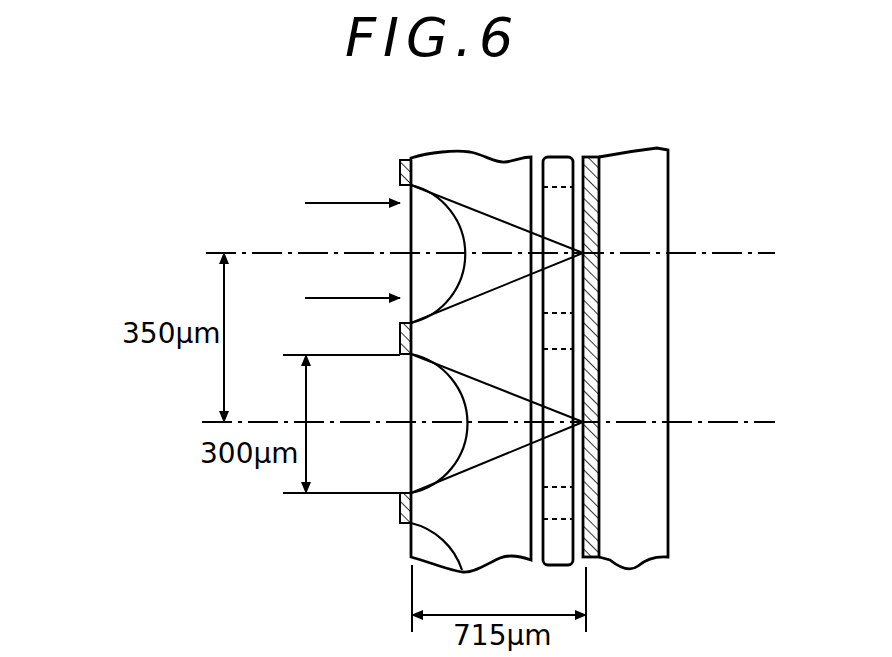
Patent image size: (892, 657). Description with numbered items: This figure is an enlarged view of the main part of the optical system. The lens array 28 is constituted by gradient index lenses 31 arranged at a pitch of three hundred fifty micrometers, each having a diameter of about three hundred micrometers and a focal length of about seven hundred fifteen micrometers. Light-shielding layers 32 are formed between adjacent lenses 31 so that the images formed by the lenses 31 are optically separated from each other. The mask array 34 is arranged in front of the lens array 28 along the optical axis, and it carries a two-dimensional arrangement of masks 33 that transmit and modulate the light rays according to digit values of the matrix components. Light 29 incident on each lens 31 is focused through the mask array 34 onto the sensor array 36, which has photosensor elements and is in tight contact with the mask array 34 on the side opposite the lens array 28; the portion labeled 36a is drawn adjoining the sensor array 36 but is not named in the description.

The lens array 28 is at (510, 157).
The light 29 is at (343, 203).
The gradient index lens 31 is at (455, 212).
The light-shielding layer 32 is at (404, 158).
The mask 33 is at (552, 453).
The mask array 34 is at (560, 157).
The sensor array 36 is at (585, 157).
The substrate 36a is at (668, 195).